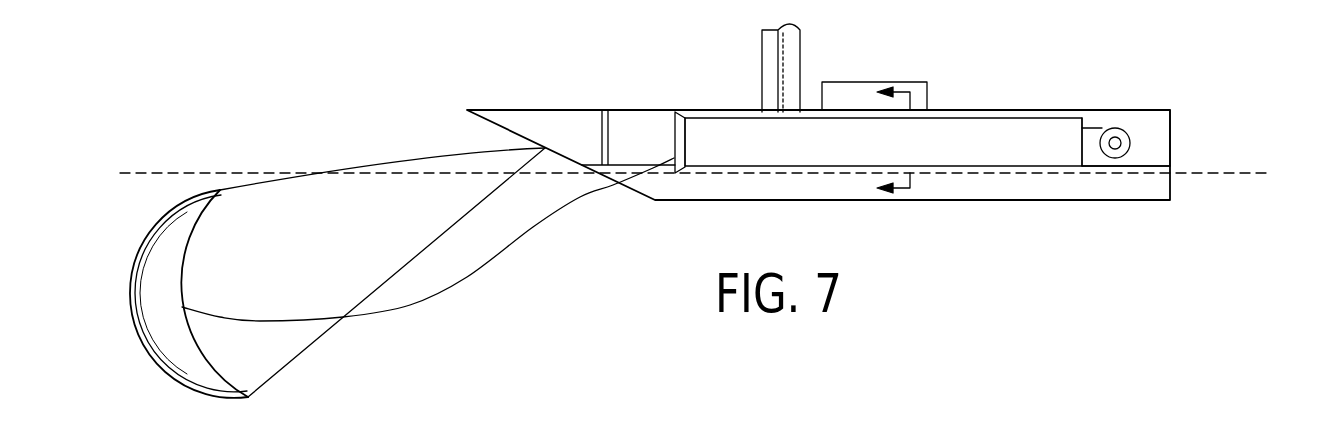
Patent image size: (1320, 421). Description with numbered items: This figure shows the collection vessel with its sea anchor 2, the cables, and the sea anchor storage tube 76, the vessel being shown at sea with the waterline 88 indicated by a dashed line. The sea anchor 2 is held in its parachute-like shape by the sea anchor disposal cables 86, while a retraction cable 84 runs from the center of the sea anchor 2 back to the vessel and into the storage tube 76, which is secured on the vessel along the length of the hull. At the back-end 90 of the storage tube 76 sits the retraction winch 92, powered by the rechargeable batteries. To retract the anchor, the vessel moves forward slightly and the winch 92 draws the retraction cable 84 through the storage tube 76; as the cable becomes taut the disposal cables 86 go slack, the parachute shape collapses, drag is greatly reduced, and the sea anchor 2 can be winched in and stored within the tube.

The sea anchor 2 is at (165, 308).
The storage tube 76 is at (889, 151).
The retraction cable 84 is at (482, 280).
The sea anchor disposal cables 86 is at (256, 184).
The waterline 88 is at (1222, 169).
The back-end of the storage tube 90 is at (1087, 111).
The retraction winch 92 is at (1131, 142).